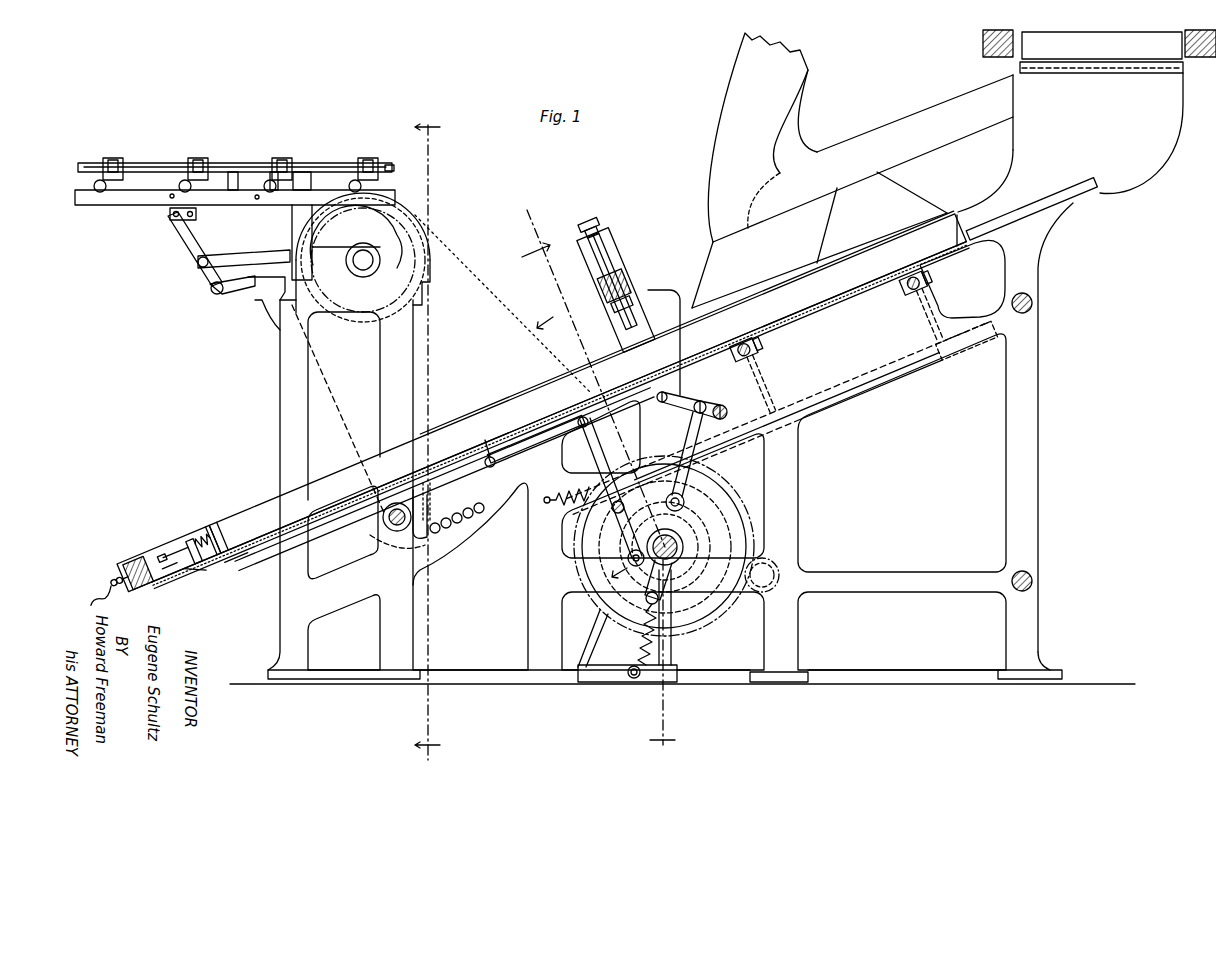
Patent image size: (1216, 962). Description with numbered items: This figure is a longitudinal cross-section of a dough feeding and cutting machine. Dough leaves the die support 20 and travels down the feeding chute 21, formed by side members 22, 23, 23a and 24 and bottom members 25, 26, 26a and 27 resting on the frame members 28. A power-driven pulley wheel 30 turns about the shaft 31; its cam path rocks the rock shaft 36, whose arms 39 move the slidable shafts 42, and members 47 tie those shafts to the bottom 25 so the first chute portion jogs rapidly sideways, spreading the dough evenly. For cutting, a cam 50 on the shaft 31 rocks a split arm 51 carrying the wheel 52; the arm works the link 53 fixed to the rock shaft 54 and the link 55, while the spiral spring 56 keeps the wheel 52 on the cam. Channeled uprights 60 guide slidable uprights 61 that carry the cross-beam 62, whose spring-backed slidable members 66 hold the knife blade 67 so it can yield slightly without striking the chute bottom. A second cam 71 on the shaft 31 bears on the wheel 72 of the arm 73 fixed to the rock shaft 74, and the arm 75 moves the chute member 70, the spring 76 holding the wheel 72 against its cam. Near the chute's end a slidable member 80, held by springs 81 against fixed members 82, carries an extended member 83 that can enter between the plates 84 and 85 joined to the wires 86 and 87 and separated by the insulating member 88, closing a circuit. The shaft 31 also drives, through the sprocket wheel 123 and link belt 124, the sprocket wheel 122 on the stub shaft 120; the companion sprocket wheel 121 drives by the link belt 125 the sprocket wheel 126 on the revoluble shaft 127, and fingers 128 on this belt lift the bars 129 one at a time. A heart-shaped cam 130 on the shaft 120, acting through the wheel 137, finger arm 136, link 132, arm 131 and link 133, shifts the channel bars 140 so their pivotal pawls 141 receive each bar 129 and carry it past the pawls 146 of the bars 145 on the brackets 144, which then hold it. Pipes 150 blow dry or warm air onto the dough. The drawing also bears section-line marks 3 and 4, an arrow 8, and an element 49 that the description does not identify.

The die support 20 is at (1160, 62).
The feeding chute 21 is at (1150, 150).
The side members 22 is at (808, 312).
The side members 23 is at (514, 405).
The side members 23a is at (462, 420).
The side members 24 is at (252, 510).
The bottom member 25 is at (840, 290).
The bottom member 26 is at (475, 420).
The bottom member 26a is at (488, 468).
The bottom member 27 is at (230, 570).
The frame members 28 is at (280, 412).
The pulley wheel 30 is at (600, 604).
The shaft 31 is at (690, 528).
The rock shaft 36 is at (845, 395).
The arms 39 is at (895, 337).
The shafts 42 is at (738, 354).
The members 47 is at (775, 340).
The pinion 49 is at (762, 575).
The cam 50 is at (720, 540).
The split arm 51 is at (700, 470).
The wheel 52 is at (686, 498).
The link 53 is at (698, 400).
The rock shaft 54 is at (720, 404).
The link 55 is at (657, 406).
The spiral spring 56 is at (640, 640).
The channeled uprights 60 is at (625, 278).
The upright 61 is at (600, 240).
The cross-beam 62 is at (612, 262).
The slidable member 66 is at (610, 310).
The knife blade 67 is at (628, 337).
The chute member 70 is at (441, 468).
The cam 71 is at (690, 585).
The wheel 72 is at (626, 560).
The arm 73 is at (610, 510).
The rock shaft 74 is at (620, 525).
The arm 75 is at (548, 450).
The spring 76 is at (562, 490).
The slidable member 80 is at (205, 530).
The springs 81 is at (190, 572).
The fixed members 82 is at (198, 590).
The extended member 83 is at (166, 548).
The plate 84 is at (148, 563).
The plate 85 is at (160, 588).
The wire 86 is at (110, 580).
The wire 87 is at (90, 582).
The insulating member 88 is at (140, 592).
The stub shafts 120 is at (360, 270).
The sprocket wheel 121 is at (424, 300).
The sprocket wheel 122 is at (420, 252).
The sprocket wheel 123 is at (700, 525).
The link belt 124 is at (462, 285).
The link belt 125 is at (352, 460).
The sprocket wheel 126 is at (395, 525).
The revoluble shaft 127 is at (397, 503).
The fingers 128 is at (385, 560).
The bars 129 is at (100, 180).
The heart-shaped cam 130 is at (395, 238).
The arm 131 is at (236, 292).
The link 132 is at (185, 240).
The link 133 is at (170, 214).
The finger arm 136 is at (263, 256).
The wheel 137 is at (265, 300).
The channel bars 140 is at (128, 205).
The pivotal pawls 141 is at (233, 172).
The brackets 144 is at (308, 172).
The parallel bars 145 is at (181, 163).
The pawls 146 is at (272, 172).
The pipes 150 is at (828, 205).
The section line 3- 3 is at (593, 482).
The section line 4- 4 is at (436, 449).
The arrow 8 is at (580, 442).